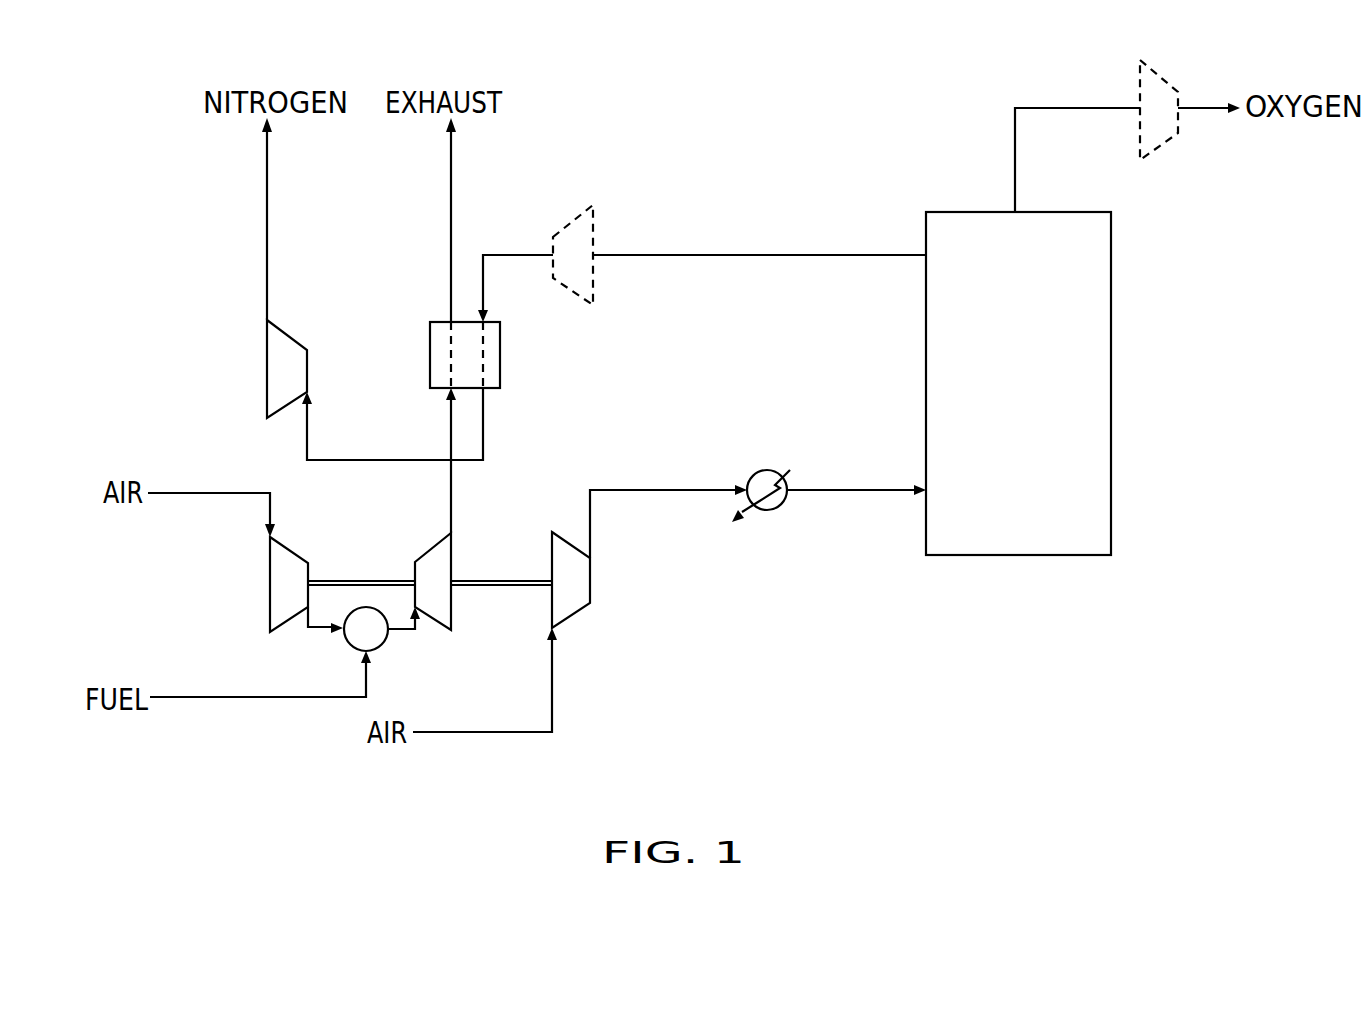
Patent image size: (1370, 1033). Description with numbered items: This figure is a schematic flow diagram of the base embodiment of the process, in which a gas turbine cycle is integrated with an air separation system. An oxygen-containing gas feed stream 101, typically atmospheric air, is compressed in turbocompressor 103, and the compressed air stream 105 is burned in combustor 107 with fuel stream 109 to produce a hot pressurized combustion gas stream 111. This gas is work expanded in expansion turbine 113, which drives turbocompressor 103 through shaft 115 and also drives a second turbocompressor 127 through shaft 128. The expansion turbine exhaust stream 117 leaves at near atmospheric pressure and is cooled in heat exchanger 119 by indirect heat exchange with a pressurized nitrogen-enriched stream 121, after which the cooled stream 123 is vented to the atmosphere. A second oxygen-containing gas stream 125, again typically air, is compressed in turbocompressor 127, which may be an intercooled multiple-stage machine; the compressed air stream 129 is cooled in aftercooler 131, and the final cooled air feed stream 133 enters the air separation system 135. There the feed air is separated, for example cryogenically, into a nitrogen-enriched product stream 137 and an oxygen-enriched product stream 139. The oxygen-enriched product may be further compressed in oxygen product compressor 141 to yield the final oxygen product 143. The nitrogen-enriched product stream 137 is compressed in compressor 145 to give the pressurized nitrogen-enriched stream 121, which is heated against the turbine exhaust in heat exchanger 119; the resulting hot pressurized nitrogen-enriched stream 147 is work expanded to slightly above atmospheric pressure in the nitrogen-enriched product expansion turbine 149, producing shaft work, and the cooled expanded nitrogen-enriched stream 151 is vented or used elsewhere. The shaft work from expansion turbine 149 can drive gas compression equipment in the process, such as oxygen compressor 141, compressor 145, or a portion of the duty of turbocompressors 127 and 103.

The oxygen-containing gas feed stream 101 is at (195, 493).
The turbocompressor 103 is at (270, 583).
The compressed air stream 105 is at (318, 632).
The combustor 107 is at (384, 643).
The fuel stream 109 is at (216, 697).
The hot pressurized combustion gas stream 111 is at (405, 631).
The expansion turbine 113 is at (430, 553).
The shaft 115 is at (367, 583).
The expansion turbine exhaust stream 117 is at (452, 500).
The heat exchanger 119 is at (500, 355).
The pressurized nitrogen-enriched stream 121 is at (500, 257).
The cooled stream 123 is at (451, 185).
The second oxygen-containing gas stream 125 is at (510, 732).
The turbocompressor 127 is at (552, 562).
The shaft 128 is at (480, 586).
The compressed air stream 129 is at (676, 490).
The aftercooler 131 is at (773, 467).
The final cooled air feed stream 133 is at (858, 490).
The air separation system 135 is at (1046, 391).
The nitrogen-enriched product stream 137 is at (730, 255).
The oxygen-enriched product stream 139 is at (1075, 108).
The oxygen product compressor 141 is at (1168, 80).
The final oxygen product 143 is at (1207, 108).
The compressor 145 is at (578, 218).
The hot pressurized nitrogen-enriched stream 147 is at (368, 460).
The nitrogen-enriched product expansion turbine 149 is at (267, 360).
The cooled expanded nitrogen-enriched stream 151 is at (267, 252).